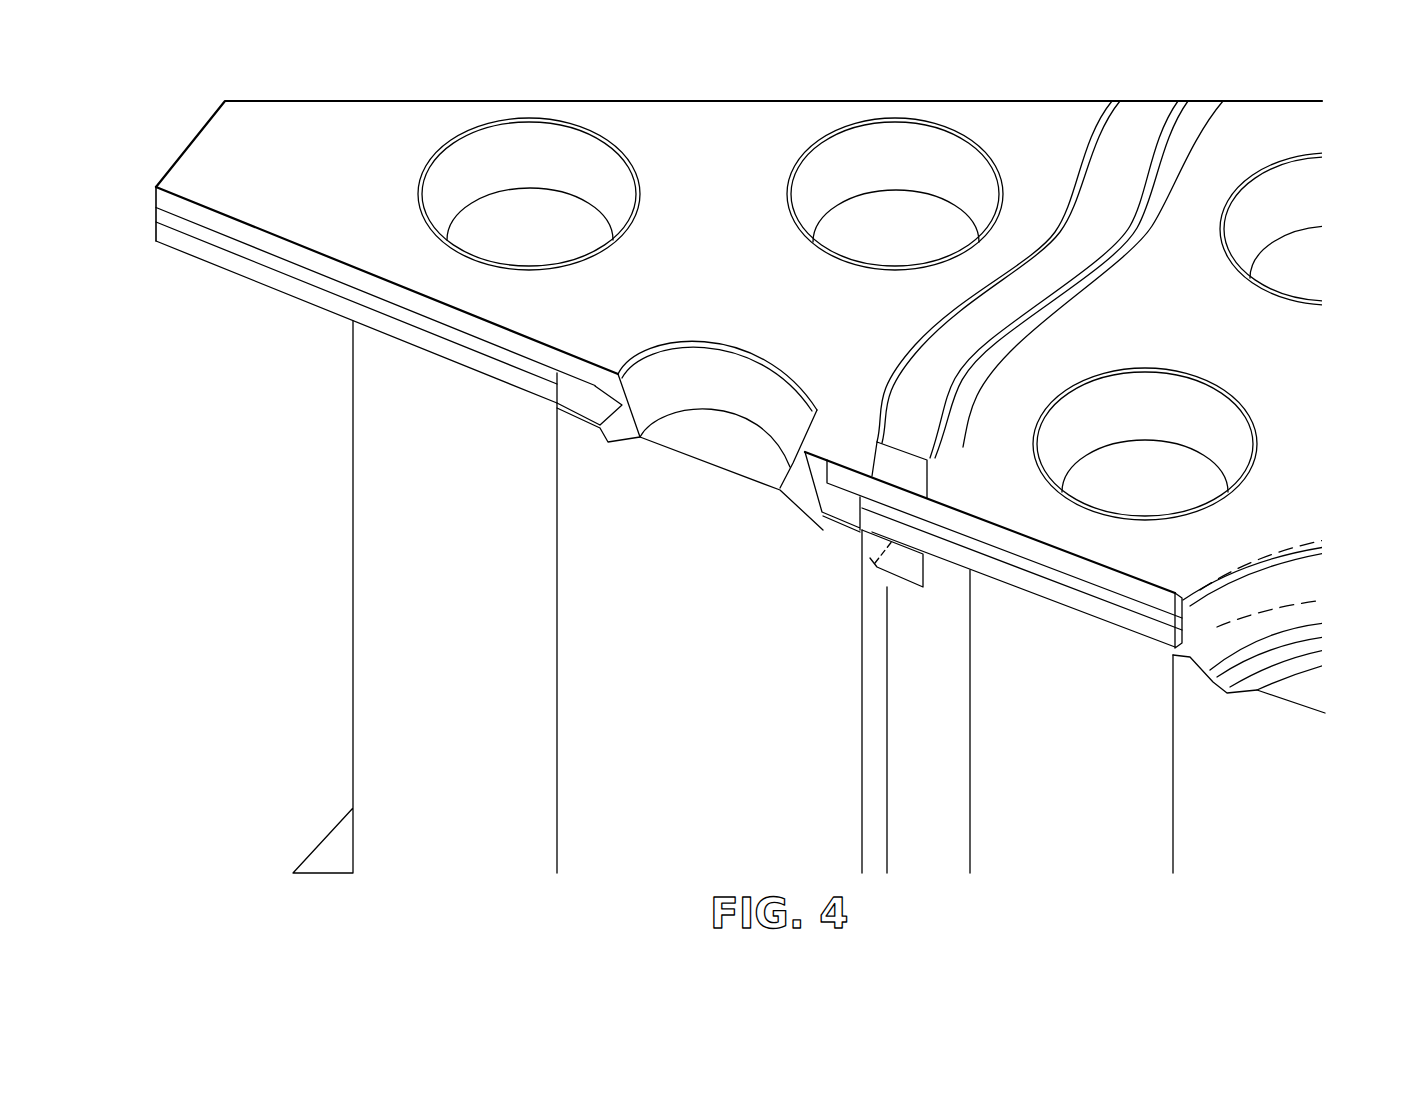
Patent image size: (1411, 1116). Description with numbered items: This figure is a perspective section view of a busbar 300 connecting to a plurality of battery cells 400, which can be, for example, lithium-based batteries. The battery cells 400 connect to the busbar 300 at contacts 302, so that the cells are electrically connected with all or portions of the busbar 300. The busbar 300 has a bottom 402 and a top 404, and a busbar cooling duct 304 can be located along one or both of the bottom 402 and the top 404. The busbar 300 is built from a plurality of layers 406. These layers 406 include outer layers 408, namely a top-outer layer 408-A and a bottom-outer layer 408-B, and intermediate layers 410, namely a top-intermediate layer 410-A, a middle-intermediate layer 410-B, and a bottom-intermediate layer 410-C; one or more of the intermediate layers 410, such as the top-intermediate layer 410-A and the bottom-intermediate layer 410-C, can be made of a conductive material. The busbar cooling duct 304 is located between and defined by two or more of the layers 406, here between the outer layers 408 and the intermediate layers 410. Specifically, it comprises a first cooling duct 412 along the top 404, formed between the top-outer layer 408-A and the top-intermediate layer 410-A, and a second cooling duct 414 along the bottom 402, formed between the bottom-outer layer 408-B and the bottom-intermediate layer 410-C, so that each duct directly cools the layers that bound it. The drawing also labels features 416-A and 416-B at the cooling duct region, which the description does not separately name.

The busbar 300 is at (1014, 86).
The contacts 302 is at (555, 215).
The busbar cooling duct 304 is at (860, 530).
The battery cells 400 is at (352, 545).
The bottom 402 is at (406, 306).
The top 404 is at (266, 168).
The layers 406 is at (141, 207).
The outer layers 408 is at (1002, 543).
The top-outer layer 408-A is at (296, 243).
The bottom-outer layer 408-B is at (303, 305).
The intermediate layers 410 is at (1107, 613).
The top-intermediate layer 410-A is at (465, 332).
The middle-intermediate layer 410-B is at (528, 368).
The bottom-intermediate layer 410-C is at (485, 363).
The first cooling duct 412 is at (937, 477).
The second cooling duct 414 is at (866, 556).
The first channel wall 416-A is at (888, 462).
The second channel wall 416-B is at (906, 560).